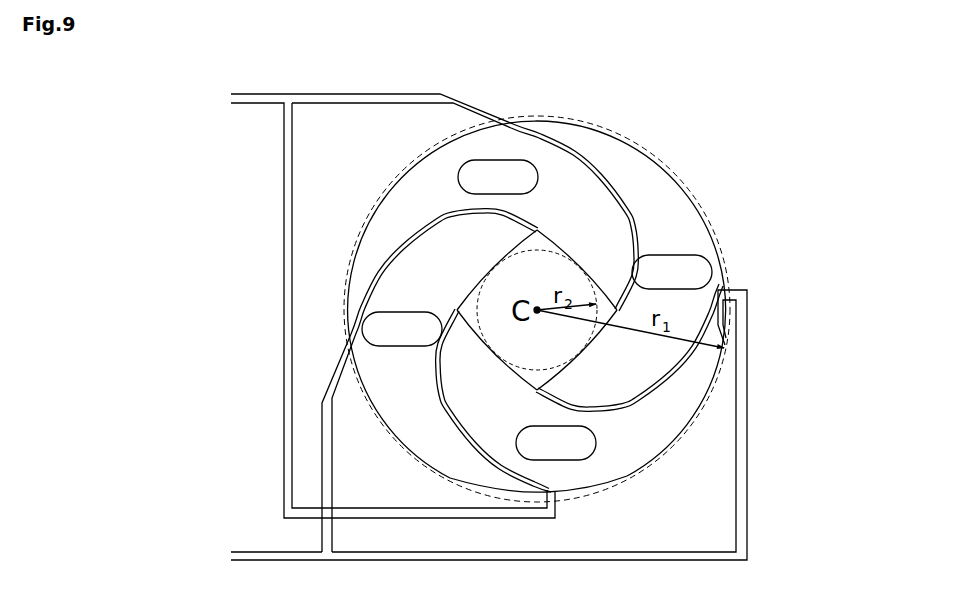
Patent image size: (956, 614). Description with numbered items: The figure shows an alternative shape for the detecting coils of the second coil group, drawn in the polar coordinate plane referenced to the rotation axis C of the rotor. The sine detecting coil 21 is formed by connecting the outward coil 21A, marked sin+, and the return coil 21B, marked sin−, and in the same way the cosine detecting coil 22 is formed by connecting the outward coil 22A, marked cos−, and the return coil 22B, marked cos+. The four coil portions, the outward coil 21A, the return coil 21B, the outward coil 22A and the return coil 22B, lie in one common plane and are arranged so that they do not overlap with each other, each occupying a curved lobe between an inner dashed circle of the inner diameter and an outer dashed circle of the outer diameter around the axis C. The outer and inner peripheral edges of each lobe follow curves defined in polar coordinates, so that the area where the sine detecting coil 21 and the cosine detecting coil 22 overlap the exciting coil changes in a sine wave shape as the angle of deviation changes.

The sine detecting coil 21 is at (760, 452).
The outward coil 21A is at (390, 188).
The return coil 21B is at (638, 470).
The cosine detecting coil 22 is at (272, 354).
The outward coil 22A is at (430, 471).
The return coil 22B is at (673, 168).